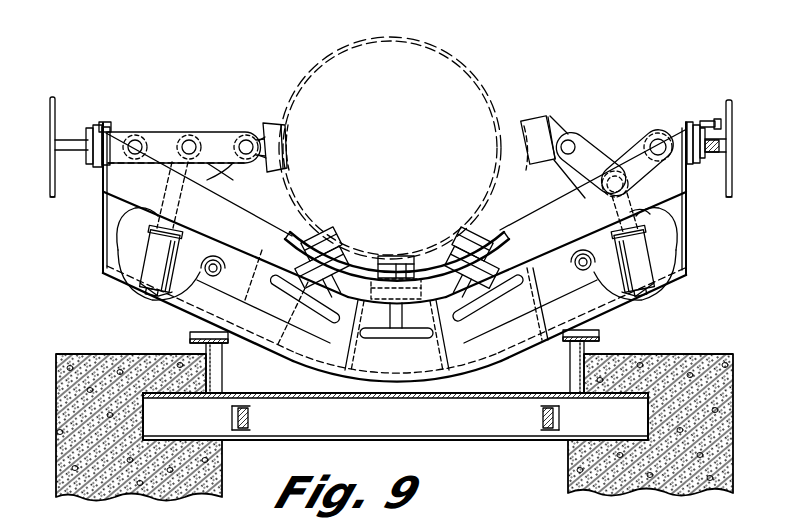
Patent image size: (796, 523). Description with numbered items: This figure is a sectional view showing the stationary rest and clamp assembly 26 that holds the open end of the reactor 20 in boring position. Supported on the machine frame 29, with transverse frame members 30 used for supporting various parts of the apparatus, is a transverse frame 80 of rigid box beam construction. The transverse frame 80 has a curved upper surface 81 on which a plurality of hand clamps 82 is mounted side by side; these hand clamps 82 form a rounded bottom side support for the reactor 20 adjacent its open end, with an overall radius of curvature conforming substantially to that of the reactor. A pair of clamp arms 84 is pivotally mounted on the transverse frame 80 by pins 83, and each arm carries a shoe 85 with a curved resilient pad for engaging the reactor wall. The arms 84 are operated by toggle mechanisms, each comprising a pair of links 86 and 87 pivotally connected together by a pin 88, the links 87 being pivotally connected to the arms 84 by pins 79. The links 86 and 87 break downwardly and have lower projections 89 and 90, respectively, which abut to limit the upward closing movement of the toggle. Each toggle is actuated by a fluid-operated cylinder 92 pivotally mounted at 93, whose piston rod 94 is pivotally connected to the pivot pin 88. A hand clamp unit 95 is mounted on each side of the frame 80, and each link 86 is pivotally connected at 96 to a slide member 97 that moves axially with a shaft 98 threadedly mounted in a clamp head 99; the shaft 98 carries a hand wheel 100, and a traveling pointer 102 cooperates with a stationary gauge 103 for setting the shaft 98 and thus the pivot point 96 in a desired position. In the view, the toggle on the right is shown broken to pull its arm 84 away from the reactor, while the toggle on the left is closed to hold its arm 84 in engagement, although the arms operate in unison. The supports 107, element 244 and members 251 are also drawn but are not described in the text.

The reactor 20 is at (447, 54).
The stationary rest and clamp assembly 26 is at (86, 279).
The machine frame 29 is at (148, 492).
The transverse frame members 30 is at (469, 438).
The pins 79 is at (270, 144).
The transverse frame 80 is at (688, 266).
The curved upper surface 81 is at (490, 243).
The hand clamps 82 is at (446, 241).
The pins 83 is at (224, 268).
The clamp arms 84 is at (262, 128).
The shoes 85 is at (289, 120).
The links 86 is at (163, 133).
The links 87 is at (217, 134).
The pin 88 is at (190, 139).
The lower projections 89 is at (163, 171).
The lower projections 90 is at (222, 176).
The fluid-operated cylinder 92 is at (156, 250).
The pivotal mounting 93 is at (148, 292).
The piston rod 94 is at (164, 206).
The hand clamp unit 95 is at (50, 127).
The pivot point 96 is at (662, 138).
The slide member 97 is at (122, 130).
The shaft 98 is at (72, 136).
The clamp head 99 is at (96, 164).
The hand wheel 100 is at (52, 172).
The traveling pointer 102 is at (721, 124).
The stationary gauge 103 is at (720, 140).
The support pedestal 107 is at (226, 346).
The base plate 244 is at (431, 520).
The beam stiffener 251 is at (246, 432).